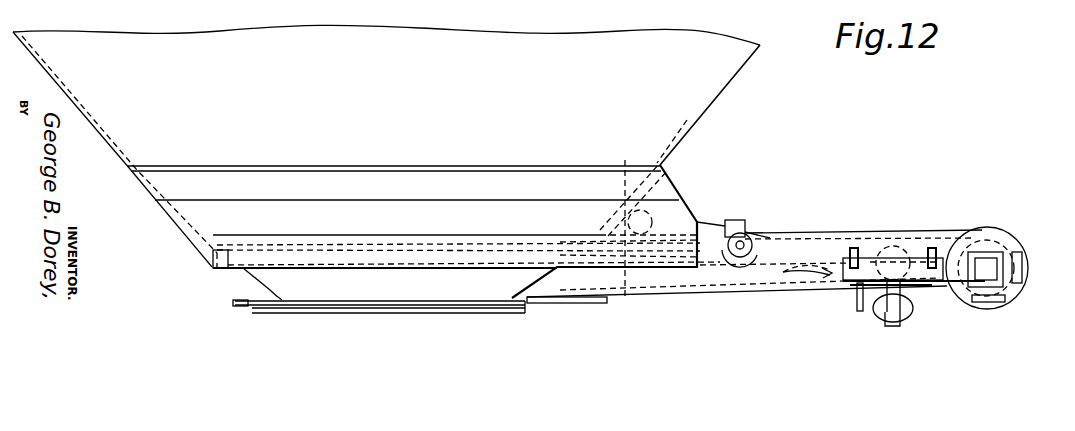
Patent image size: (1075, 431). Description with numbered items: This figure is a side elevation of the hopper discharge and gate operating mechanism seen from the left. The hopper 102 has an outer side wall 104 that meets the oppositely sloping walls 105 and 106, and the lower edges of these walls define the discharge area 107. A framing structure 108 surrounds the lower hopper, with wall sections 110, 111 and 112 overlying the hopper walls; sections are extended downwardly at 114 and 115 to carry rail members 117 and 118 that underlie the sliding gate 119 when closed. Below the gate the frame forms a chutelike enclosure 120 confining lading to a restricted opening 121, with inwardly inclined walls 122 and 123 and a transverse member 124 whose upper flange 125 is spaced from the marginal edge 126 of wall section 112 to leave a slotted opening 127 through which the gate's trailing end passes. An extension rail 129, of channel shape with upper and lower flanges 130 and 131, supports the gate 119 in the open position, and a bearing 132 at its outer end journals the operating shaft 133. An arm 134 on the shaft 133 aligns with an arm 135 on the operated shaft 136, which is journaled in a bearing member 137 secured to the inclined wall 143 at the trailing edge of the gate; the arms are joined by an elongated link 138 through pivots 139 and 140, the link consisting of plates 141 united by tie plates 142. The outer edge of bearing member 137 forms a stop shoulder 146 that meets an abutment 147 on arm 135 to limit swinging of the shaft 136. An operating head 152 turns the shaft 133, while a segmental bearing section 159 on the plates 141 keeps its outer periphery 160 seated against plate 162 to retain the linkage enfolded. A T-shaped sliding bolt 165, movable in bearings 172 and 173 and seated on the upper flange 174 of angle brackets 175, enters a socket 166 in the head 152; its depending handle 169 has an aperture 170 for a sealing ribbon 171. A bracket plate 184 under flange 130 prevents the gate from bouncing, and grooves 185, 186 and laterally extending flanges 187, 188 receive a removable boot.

The hopper 102 is at (150, 21).
The outer side wall 104 is at (353, 98).
The sloping wall 105 is at (50, 80).
The sloping wall 106 is at (723, 95).
The discharge area 107 is at (416, 188).
The framing structure 108 is at (155, 220).
The wall section 110 is at (468, 178).
The wall section 111 is at (133, 183).
The wall section 112 is at (670, 162).
The downward extension of wall 114 is at (440, 243).
The downward extension of wall 115 is at (213, 257).
The rail member 117 is at (388, 258).
The rail member 118 is at (215, 270).
The sliding gate 119 is at (350, 233).
The chutelike enclosure 120 is at (216, 276).
The restricted opening 121 is at (396, 314).
The inwardly inclined wall 122 is at (243, 269).
The inwardly inclined wall 123 is at (354, 306).
The inclined wall member 124 is at (541, 305).
The flange 125 is at (578, 262).
The marginal edge 126 is at (595, 238).
The slotted opening 127 is at (583, 236).
The extension rail 129 is at (855, 245).
The upper flange 130 is at (905, 245).
The lower flange 131 is at (760, 286).
The bearing 132 is at (1003, 240).
The operating shaft 133 is at (990, 270).
The arm 134 is at (980, 303).
The arm 135 is at (703, 220).
The operated shaft 136 is at (672, 180).
The bearing member 137 is at (610, 270).
The elongated link 138 is at (800, 228).
The pivot 139 is at (908, 250).
The pivot 140 is at (742, 222).
The plate 141 is at (760, 232).
The tie plate 142 is at (742, 232).
The inclined wall 143 is at (628, 218).
The stop shoulder 146 is at (715, 286).
The abutment 147 is at (742, 286).
The operating head 152 is at (996, 235).
The segmental bearing section 159 is at (808, 276).
The outer periphery 160 is at (812, 275).
The plate 162 is at (1024, 284).
The T-shaped sliding bolt 165 is at (860, 312).
The socket 166 is at (978, 227).
The depending handle 169 is at (898, 326).
The aperture 170 is at (890, 322).
The sealing ribbon 171 is at (903, 300).
The bearing 172 is at (858, 247).
The bearing 173 is at (936, 247).
The upper flange 174 is at (852, 288).
The angle shaped bracket 175 is at (873, 314).
The bracket plate 184 is at (590, 300).
The groove 185 is at (444, 312).
The groove 186 is at (517, 302).
The laterally extending flange 187 is at (238, 307).
The laterally extending flange 188 is at (307, 306).